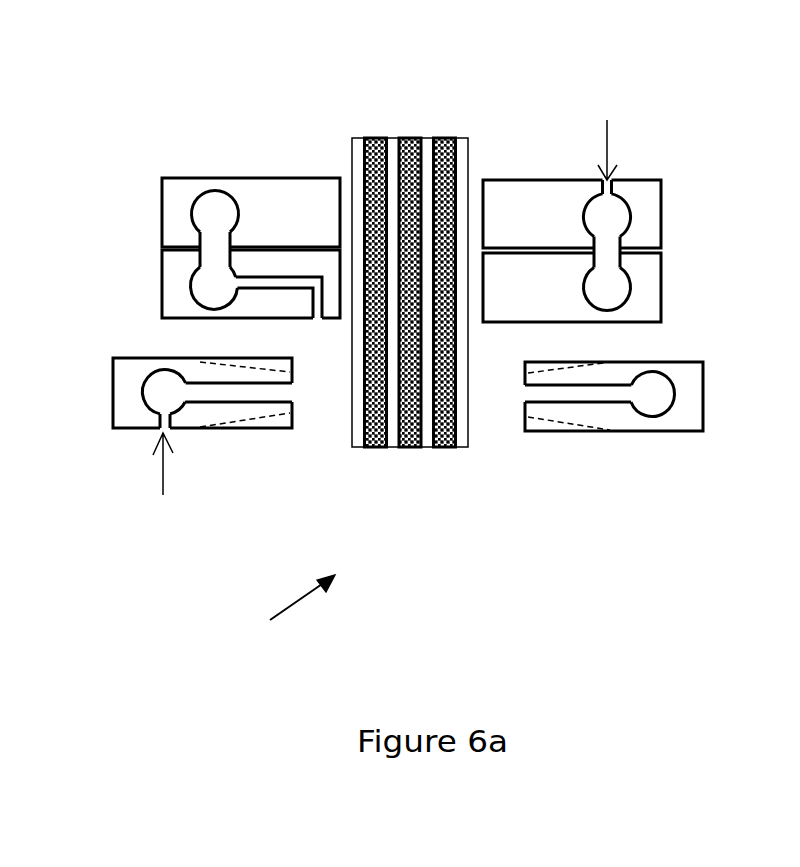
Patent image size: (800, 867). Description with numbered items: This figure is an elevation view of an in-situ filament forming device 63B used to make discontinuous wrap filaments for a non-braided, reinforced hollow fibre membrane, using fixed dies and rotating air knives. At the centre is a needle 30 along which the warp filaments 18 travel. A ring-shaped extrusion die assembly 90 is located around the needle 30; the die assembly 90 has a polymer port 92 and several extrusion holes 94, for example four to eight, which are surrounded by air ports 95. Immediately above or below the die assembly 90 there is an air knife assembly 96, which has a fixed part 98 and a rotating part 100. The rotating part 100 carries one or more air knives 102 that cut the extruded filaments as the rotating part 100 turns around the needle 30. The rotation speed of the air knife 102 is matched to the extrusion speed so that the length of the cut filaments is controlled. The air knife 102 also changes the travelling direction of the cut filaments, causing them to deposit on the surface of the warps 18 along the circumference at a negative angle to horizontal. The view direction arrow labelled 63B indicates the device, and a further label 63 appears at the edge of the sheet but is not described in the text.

The warp filaments 18 is at (447, 138).
The needle 30 is at (469, 180).
The fixed part 98 is at (262, 198).
The air knife 102 is at (317, 320).
The air knife assembly 96 is at (652, 282).
The rotating part 100 is at (640, 310).
The polymer port 92 is at (170, 428).
The extrusion holes 94 is at (292, 402).
The air ports 95 is at (525, 415).
The ring-shaped extrusion die assembly 90 is at (682, 419).
The in-situ filament forming device 63B is at (274, 612).
The view reference 63 is at (789, 534).